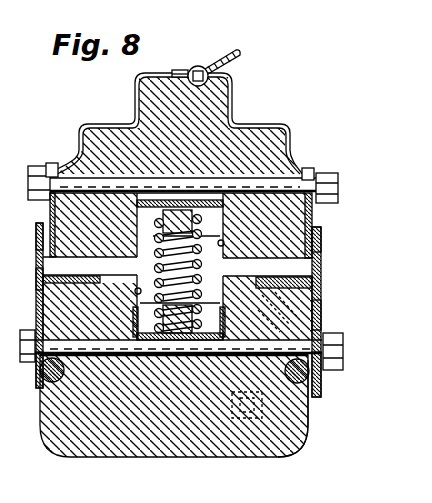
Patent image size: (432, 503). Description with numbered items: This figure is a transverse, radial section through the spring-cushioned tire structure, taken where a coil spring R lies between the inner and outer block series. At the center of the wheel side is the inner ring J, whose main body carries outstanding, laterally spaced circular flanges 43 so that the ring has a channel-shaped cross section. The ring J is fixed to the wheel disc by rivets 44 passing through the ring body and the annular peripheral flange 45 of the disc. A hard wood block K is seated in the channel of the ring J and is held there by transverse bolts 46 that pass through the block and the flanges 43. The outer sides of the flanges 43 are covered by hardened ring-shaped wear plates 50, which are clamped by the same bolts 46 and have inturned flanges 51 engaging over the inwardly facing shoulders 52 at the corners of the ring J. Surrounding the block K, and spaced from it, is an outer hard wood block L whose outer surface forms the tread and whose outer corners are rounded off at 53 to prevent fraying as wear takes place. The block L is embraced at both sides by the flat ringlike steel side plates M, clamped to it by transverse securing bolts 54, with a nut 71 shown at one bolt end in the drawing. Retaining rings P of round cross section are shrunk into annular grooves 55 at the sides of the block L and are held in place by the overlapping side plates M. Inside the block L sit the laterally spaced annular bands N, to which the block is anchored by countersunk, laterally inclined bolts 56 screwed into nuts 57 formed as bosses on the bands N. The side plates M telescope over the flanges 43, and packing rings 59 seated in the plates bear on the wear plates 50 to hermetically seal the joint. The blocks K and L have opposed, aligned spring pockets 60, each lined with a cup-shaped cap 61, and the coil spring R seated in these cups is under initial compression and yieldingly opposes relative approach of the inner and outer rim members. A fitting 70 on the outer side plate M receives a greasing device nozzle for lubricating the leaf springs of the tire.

The circular flanges 43 is at (50, 213).
The rivets 44 is at (203, 68).
The annular peripheral flange 45 is at (180, 70).
The transverse bolts 46 is at (283, 181).
The wear plates 50 is at (312, 212).
The inturned flanges 51 is at (311, 168).
The inwardly facing shoulders 52 is at (51, 163).
The rounded outer corners 53 is at (52, 445).
The transverse securing bolts 54 is at (344, 352).
The annular grooves 55 is at (35, 370).
The anchoring bolts 56 is at (296, 418).
The nuts 57 is at (322, 318).
The packing rings 59 is at (38, 237).
The spring pockets 60 is at (135, 292).
The cup-shaped cap 61 is at (188, 200).
The fittings 70 is at (36, 278).
The nut 71 is at (20, 342).
The inner ring J is at (230, 110).
The inner hard wood blocks K is at (288, 143).
The outer hard wood blocks L is at (283, 435).
The side plates M is at (322, 300).
The annular bands N is at (294, 277).
The retaining rings P is at (53, 382).
The coil springs R is at (146, 338).